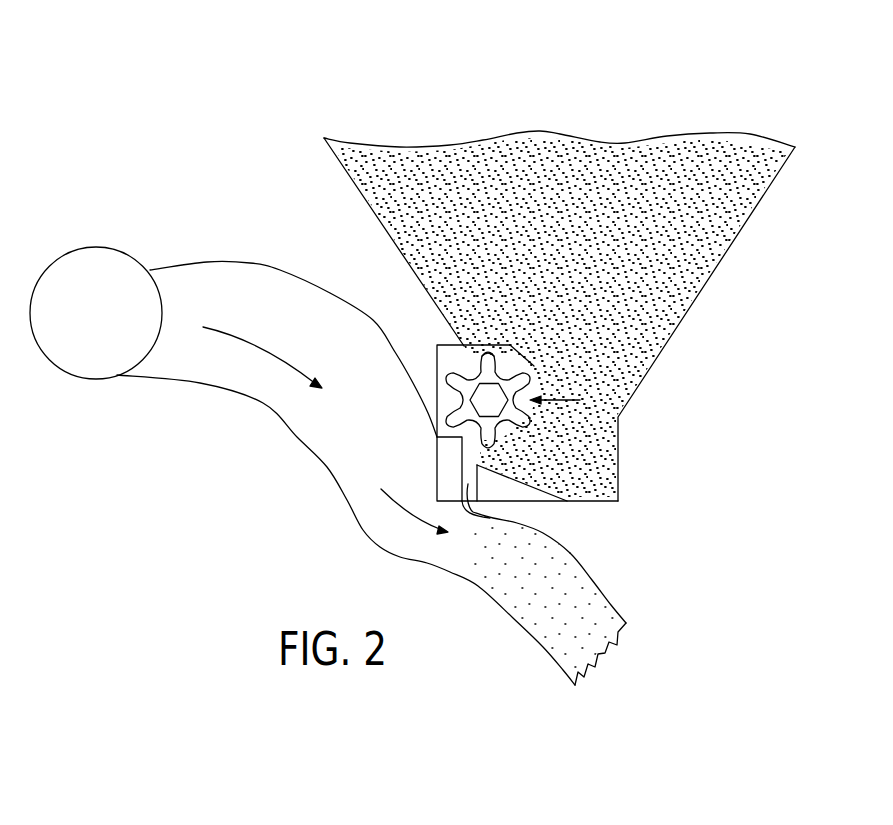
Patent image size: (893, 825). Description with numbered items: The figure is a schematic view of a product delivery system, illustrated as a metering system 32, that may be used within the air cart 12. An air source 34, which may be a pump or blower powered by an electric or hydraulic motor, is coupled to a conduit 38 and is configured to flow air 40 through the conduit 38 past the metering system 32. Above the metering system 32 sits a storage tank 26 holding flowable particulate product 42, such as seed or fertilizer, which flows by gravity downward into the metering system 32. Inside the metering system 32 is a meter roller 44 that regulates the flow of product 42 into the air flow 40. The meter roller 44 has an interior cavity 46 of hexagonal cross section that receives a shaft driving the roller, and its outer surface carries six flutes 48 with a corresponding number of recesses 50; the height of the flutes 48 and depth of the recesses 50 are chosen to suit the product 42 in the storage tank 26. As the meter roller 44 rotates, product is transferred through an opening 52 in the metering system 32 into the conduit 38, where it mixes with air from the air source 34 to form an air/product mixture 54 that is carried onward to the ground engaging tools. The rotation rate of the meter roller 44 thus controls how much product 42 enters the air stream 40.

The air cart 12 is at (176, 126).
The storage tank 26 is at (351, 179).
The metering system 32 is at (428, 342).
The air source 34 is at (96, 247).
The conduit 38 is at (310, 448).
The air flow 40 is at (265, 343).
The flowable particulate product 42 is at (721, 238).
The meter roller 44 is at (562, 400).
The interior cavity 46 is at (481, 398).
The flutes 48 is at (458, 376).
The recesses 50 is at (510, 345).
The opening 52 is at (490, 516).
The air/product mixture 54 is at (528, 598).